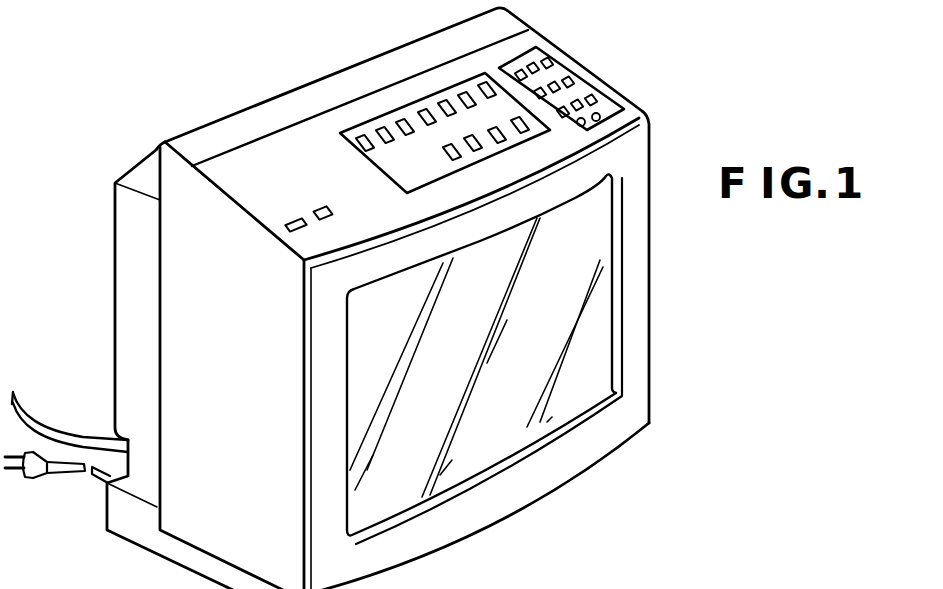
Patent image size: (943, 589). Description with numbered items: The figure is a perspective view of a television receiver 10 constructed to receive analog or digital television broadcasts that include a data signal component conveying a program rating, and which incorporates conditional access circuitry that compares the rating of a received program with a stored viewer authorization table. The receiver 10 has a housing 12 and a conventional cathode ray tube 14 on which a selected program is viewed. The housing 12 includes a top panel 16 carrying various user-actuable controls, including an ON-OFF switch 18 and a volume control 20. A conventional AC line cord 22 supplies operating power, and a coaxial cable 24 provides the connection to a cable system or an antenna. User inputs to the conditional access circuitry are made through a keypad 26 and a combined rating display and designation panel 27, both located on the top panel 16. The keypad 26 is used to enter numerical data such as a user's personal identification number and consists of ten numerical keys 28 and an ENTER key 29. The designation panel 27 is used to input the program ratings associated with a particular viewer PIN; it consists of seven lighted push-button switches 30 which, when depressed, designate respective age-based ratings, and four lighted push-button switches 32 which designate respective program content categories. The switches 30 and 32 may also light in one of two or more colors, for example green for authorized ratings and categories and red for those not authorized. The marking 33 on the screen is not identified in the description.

The television receiver 10 is at (652, 140).
The housing 12 is at (635, 268).
The cathode ray tube 14 is at (553, 345).
The top panel 16 is at (313, 138).
The ON-OFF switch 18 is at (288, 217).
The volume control 20 is at (313, 210).
The AC line cord 22 is at (67, 474).
The coaxial cable 24 is at (30, 418).
The keypad 26 is at (518, 55).
The combined rating display and designation panel 27 is at (464, 84).
The numerical keys 28 is at (580, 118).
The ENTER key 29 is at (601, 116).
The lighted push-button switches 30 is at (440, 105).
The lighted push-button switches 32 is at (500, 133).
The rating indicator 33 is at (357, 314).